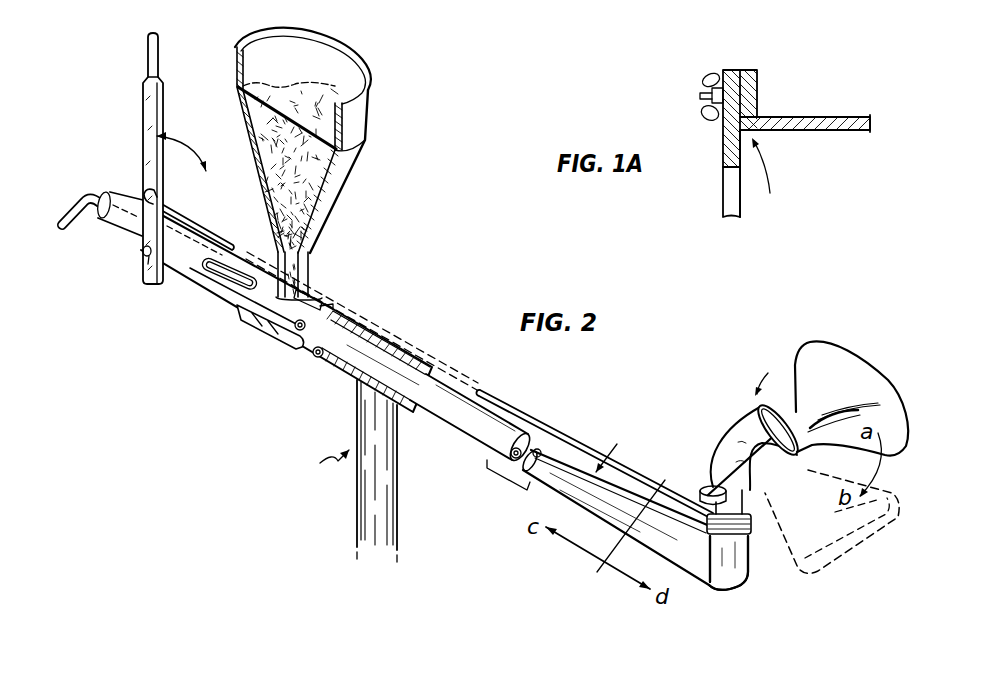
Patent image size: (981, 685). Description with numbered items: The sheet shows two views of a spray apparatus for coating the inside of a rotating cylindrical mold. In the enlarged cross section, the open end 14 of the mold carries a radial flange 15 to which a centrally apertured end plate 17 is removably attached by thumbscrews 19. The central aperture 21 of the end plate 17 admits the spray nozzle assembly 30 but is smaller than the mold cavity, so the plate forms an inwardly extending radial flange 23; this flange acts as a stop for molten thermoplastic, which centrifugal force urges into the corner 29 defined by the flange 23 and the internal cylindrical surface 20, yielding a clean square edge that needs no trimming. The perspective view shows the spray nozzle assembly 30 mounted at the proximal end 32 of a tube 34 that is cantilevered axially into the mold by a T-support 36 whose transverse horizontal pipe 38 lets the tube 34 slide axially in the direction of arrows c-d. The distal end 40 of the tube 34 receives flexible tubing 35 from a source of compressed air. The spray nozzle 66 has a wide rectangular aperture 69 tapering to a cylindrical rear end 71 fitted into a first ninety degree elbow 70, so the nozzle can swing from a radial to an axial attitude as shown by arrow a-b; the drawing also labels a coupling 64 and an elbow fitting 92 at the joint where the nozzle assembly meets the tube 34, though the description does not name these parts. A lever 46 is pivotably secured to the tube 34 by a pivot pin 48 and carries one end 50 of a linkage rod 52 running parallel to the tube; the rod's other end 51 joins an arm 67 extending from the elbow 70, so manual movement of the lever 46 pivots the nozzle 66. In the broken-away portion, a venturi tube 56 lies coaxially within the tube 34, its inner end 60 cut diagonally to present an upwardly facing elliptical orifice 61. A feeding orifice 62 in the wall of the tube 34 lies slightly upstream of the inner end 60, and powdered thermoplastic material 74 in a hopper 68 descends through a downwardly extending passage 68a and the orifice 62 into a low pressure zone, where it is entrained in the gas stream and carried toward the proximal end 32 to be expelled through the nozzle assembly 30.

In FIG. 1A, the open end 14 is at (787, 122).
In FIG. 1A, the radial flange 15 is at (752, 81).
In FIG. 1A, the end plate 17 is at (725, 68).
In FIG. 1A, the thumbscrews 19 is at (703, 95).
In FIG. 1A, the internal cylindrical surface 20 is at (836, 133).
In FIG. 1A, the central aperture 21 is at (723, 172).
In FIG. 1A, the inwardly extending radial flange 23 is at (752, 158).
In FIG. 1A, the corner 29 is at (776, 173).
In FIG. 2, the spray nozzle assembly 30 is at (754, 378).
In FIG. 2, the proximal end 32 is at (623, 510).
In FIG. 2, the tube 34 is at (617, 448).
In FIG. 2, the flexible tubing 35 is at (64, 211).
In FIG. 2, the T-support 36 is at (341, 471).
In FIG. 2, the transverse horizontal pipe 38 is at (372, 334).
In FIG. 2, the distal end 40 is at (112, 192).
In FIG. 2, the lever 46 is at (157, 98).
In FIG. 2, the pivot pin 48 is at (147, 268).
In FIG. 2, the one end of linkage rod 50 is at (150, 207).
In FIG. 2, the other end of linkage rod 51 is at (616, 542).
In FIG. 2, the linkage rod 52 is at (197, 220).
In FIG. 2, the venturi tube 56 is at (232, 288).
In FIG. 2, the inner end 60 is at (297, 330).
In FIG. 2, the elliptical orifice 61 is at (317, 358).
In FIG. 2, the feeding orifice 62 is at (302, 288).
In FIG. 2, the coupling nut 64 is at (751, 560).
In FIG. 2, the spray nozzle 66 is at (843, 371).
In FIG. 2, the arm 67 is at (737, 455).
In FIG. 2, the hopper 68 is at (360, 107).
In FIG. 2, the downwardly extending passage 68a is at (300, 258).
In FIG. 2, the rectangular aperture 69 is at (843, 552).
In FIG. 2, the first ninety degree elbow 70 is at (729, 438).
In FIG. 2, the cylindrical rear end 71 is at (790, 420).
In FIG. 2, the powdered thermoplastic material 74 is at (302, 84).
In FIG. 2, the elbow 92 is at (717, 588).